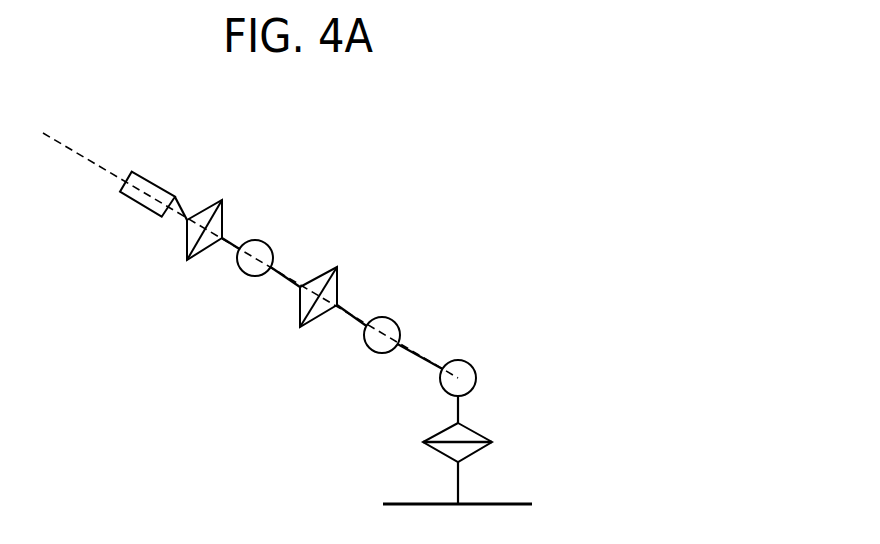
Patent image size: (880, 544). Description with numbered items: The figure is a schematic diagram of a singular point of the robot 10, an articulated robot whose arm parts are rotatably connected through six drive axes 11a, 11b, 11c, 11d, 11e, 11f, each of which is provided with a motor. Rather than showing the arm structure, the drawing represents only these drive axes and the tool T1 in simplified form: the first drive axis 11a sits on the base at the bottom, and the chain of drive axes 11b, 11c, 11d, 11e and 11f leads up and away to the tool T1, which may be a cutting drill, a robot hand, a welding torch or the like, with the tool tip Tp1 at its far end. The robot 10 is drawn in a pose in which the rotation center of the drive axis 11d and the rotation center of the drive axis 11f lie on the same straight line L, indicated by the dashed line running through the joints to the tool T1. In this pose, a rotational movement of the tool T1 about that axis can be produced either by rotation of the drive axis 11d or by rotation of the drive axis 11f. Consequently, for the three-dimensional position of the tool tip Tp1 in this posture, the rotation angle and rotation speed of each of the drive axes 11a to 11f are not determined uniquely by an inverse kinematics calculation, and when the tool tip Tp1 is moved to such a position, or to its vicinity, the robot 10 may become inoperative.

The robot 10 is at (510, 170).
The drive axis 11a is at (480, 436).
The drive axis 11b is at (457, 360).
The drive axis 11c is at (390, 317).
The drive axis 11d is at (320, 270).
The drive axis 11e is at (260, 242).
The drive axis 11f is at (206, 204).
The tool T1 is at (158, 184).
The tool tip Tp1 is at (118, 186).
The straight line L is at (240, 242).